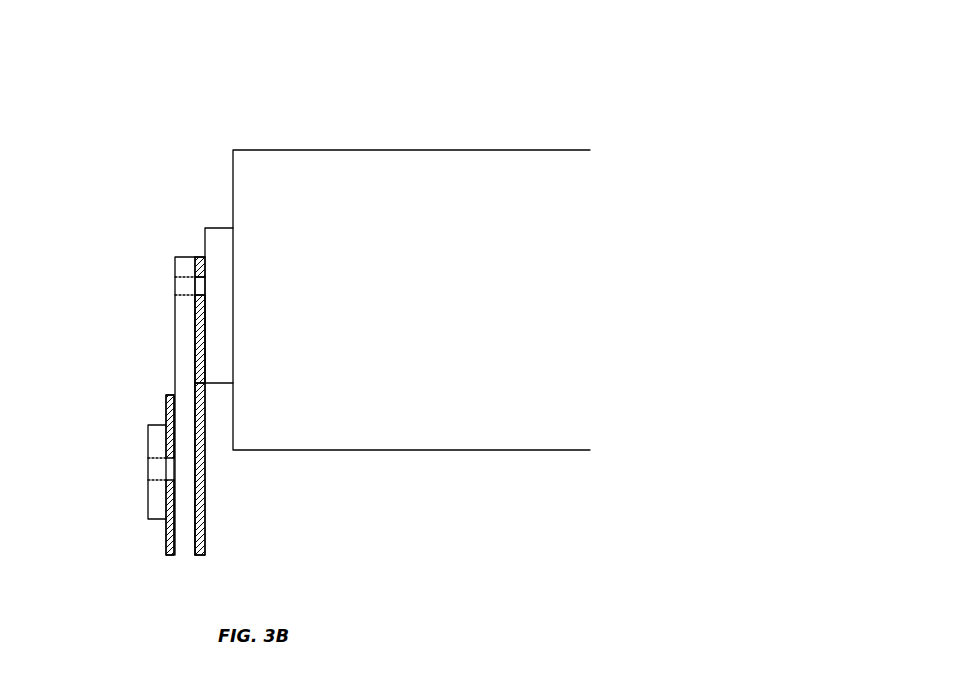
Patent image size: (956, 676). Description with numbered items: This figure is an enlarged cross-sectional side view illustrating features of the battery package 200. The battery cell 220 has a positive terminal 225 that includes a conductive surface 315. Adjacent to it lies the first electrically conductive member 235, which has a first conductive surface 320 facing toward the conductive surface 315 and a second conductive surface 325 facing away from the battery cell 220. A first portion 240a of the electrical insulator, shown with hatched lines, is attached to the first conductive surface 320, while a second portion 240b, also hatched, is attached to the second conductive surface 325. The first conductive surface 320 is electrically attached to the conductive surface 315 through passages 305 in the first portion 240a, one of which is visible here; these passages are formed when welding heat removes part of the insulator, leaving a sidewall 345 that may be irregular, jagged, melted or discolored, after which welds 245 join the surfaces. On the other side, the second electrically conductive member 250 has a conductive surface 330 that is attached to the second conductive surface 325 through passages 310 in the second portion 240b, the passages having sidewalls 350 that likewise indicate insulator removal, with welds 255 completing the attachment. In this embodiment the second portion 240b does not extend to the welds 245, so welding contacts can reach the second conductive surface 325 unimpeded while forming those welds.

The battery package 200 is at (598, 110).
The battery cell 220 is at (350, 150).
The positive terminal 225 is at (212, 229).
The first electrically conductive member 235 is at (185, 347).
The welds 245 is at (175, 290).
The second conductive surface 325 is at (175, 322).
The conductive surface 315 is at (206, 238).
The sidewall 345 is at (201, 289).
The passages 305 is at (226, 280).
The first conductive surface 320 is at (205, 350).
The first portion of electrical insulator 240a is at (206, 438).
The passages 310 is at (194, 469).
The conductive surface 330 is at (167, 432).
The sidewalls 350 is at (175, 474).
The second portion of electrical insulator 240b is at (166, 406).
The second electrically conductive member 250 is at (148, 502).
The welds 255 is at (148, 471).